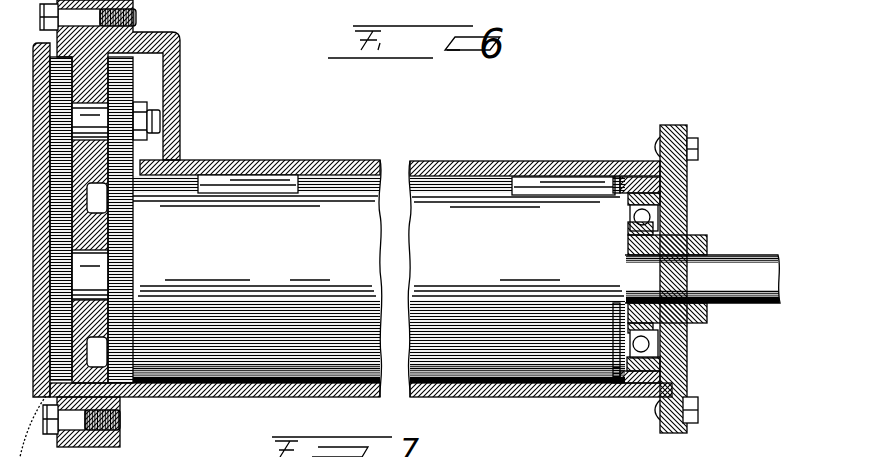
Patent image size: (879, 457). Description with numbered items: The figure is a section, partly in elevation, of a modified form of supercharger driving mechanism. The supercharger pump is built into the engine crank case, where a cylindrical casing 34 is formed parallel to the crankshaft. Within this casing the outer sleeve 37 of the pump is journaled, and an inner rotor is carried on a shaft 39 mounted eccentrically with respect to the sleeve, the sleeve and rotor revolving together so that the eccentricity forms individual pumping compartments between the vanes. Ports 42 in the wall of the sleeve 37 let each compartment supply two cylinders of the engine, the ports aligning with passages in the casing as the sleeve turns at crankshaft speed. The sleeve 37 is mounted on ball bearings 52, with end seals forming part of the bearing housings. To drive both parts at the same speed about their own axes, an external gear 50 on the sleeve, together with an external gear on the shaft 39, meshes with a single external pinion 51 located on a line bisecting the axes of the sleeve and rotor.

The cylindrical casing 34 is at (260, 168).
The outer sleeve 37 is at (379, 278).
The shaft 39 is at (702, 279).
The ports 42 is at (292, 178).
The external gear 50 is at (123, 374).
The external pinion 51 is at (60, 100).
The ball bearings 52 is at (645, 217).